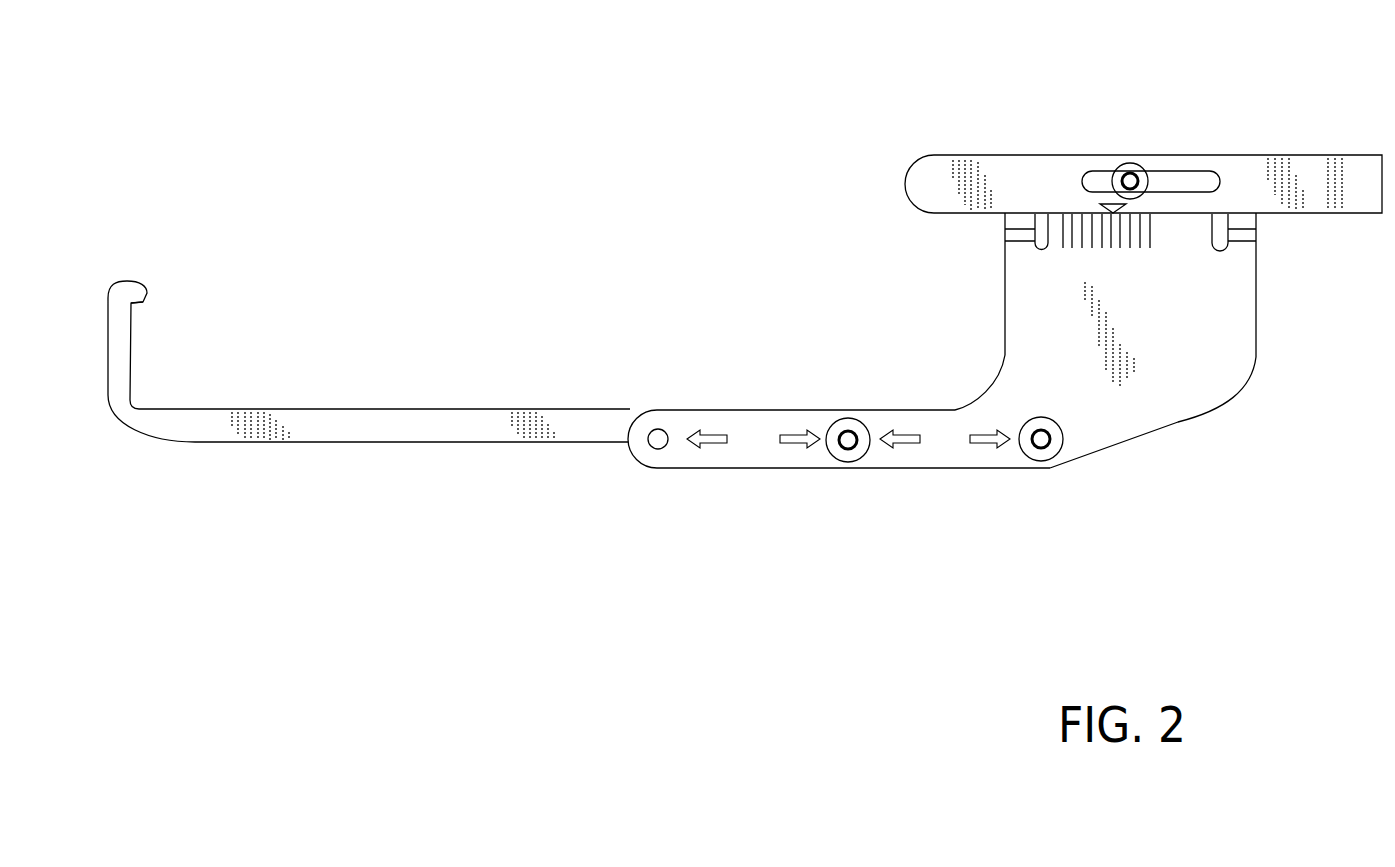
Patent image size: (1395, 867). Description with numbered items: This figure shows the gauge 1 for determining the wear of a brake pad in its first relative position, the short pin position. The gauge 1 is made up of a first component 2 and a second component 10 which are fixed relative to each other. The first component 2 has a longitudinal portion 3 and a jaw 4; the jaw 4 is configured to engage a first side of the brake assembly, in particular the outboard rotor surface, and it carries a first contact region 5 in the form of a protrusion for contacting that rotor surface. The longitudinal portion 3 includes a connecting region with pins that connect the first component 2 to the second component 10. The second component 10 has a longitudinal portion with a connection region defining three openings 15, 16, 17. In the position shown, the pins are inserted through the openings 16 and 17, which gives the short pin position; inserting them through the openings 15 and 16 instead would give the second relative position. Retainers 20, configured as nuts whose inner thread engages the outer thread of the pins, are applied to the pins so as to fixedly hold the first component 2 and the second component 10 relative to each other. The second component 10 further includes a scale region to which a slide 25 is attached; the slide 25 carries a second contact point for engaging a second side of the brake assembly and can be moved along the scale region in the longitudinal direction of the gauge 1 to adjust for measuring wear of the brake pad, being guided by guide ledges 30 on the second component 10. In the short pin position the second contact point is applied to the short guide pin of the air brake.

The gauge 1 is at (506, 150).
The first component 2 is at (209, 446).
The longitudinal portion 3 is at (373, 444).
The jaw 4 is at (106, 331).
The first contact region 5 is at (137, 300).
The second component 10 is at (1004, 272).
The opening 15 is at (658, 450).
The opening 16 is at (857, 461).
The opening 17 is at (1049, 461).
The retainers 20 is at (1026, 416).
The slide 25 is at (988, 165).
The guide ledges 30 is at (1004, 230).